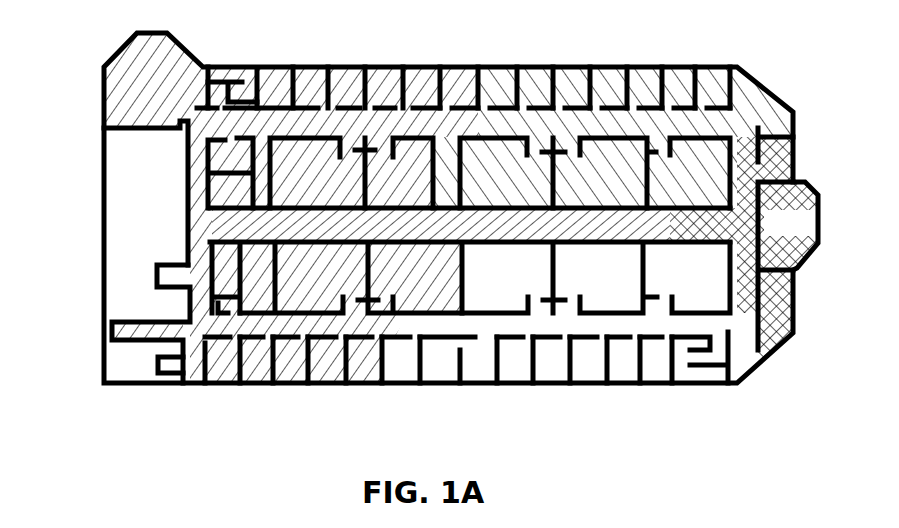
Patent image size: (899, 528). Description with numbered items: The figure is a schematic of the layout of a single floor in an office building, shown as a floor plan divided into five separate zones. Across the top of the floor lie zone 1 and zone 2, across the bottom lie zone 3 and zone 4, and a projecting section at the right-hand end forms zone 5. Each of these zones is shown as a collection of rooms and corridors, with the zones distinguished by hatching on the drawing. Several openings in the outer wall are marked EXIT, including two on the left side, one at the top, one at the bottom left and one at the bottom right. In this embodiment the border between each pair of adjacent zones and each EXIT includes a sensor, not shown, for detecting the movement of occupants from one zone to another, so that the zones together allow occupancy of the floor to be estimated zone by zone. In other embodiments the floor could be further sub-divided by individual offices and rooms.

The zone 1 is at (291, 204).
The zone 2 is at (613, 115).
The zone 3 is at (467, 321).
The zone 4 is at (575, 338).
The zone 5 is at (756, 243).
The exit EXIT is at (242, 77).